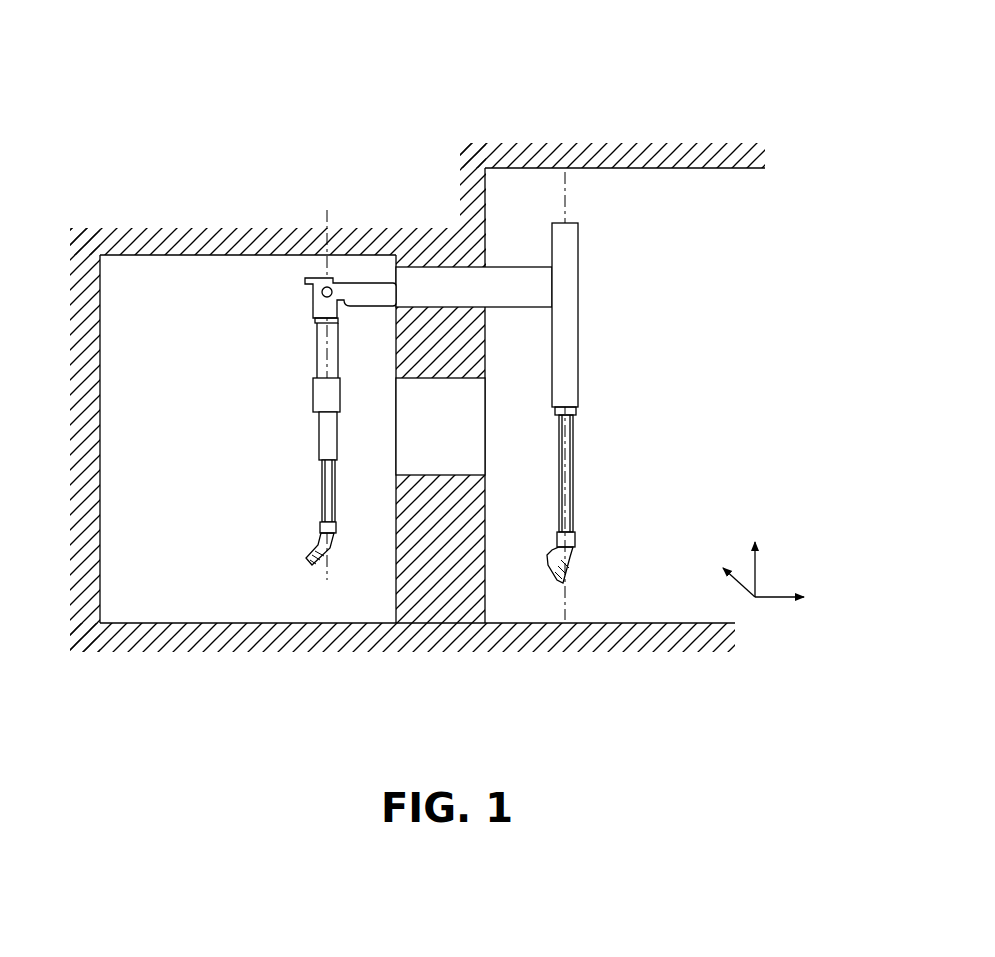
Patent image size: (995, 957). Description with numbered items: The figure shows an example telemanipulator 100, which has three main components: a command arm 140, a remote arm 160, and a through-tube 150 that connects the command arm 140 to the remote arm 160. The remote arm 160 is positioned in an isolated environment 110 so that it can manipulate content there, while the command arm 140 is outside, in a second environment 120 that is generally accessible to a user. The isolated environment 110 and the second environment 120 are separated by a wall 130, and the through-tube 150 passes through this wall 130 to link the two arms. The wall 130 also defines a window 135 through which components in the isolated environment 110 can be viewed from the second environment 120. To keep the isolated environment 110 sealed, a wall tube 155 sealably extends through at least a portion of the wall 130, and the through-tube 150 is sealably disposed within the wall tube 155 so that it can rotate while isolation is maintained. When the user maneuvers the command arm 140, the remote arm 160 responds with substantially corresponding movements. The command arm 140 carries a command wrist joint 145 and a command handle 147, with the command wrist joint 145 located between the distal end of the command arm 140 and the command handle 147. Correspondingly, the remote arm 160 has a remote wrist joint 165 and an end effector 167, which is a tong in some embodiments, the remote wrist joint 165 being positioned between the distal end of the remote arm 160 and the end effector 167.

The telemanipulator 100 is at (566, 58).
The isolated environment 110 is at (157, 603).
The second environment 120 is at (636, 613).
The wall 130 is at (412, 615).
The window 135 is at (423, 437).
The command arm 140 is at (590, 446).
The command wrist joint 145 is at (555, 550).
The command handle 147 is at (568, 563).
The through-tube 150 is at (535, 290).
The wall tube 155 is at (452, 246).
The remote arm 160 is at (308, 388).
The remote wrist joint 165 is at (333, 530).
The end effector 167 is at (318, 542).